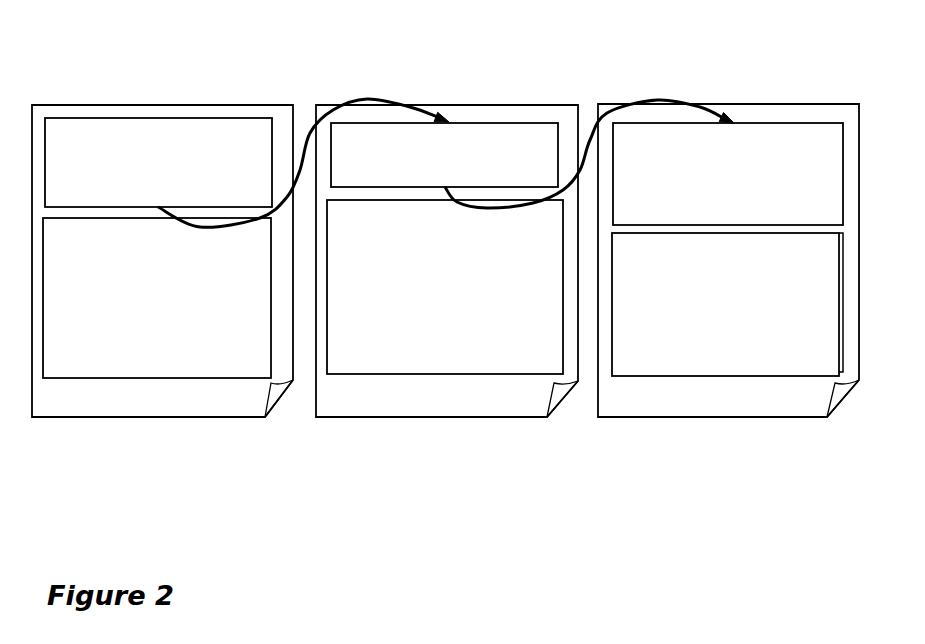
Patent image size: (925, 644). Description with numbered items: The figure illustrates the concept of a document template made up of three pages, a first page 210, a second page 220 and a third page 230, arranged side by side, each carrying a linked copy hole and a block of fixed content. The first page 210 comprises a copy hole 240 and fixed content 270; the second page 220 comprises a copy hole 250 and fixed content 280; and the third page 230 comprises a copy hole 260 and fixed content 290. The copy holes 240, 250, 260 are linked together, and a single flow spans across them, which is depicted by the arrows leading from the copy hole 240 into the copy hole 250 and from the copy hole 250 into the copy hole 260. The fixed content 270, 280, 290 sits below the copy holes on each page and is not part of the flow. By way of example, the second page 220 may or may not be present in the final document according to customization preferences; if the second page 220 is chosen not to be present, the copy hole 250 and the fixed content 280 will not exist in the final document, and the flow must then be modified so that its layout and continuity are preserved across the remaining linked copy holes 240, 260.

The first page 210 is at (75, 417).
The second page 220 is at (348, 417).
The third page 230 is at (630, 417).
The copy hole 240 is at (157, 128).
The copy hole 250 is at (445, 128).
The copy hole 260 is at (733, 132).
The fixed content 270 is at (213, 363).
The fixed content 280 is at (498, 358).
The fixed content 290 is at (783, 355).